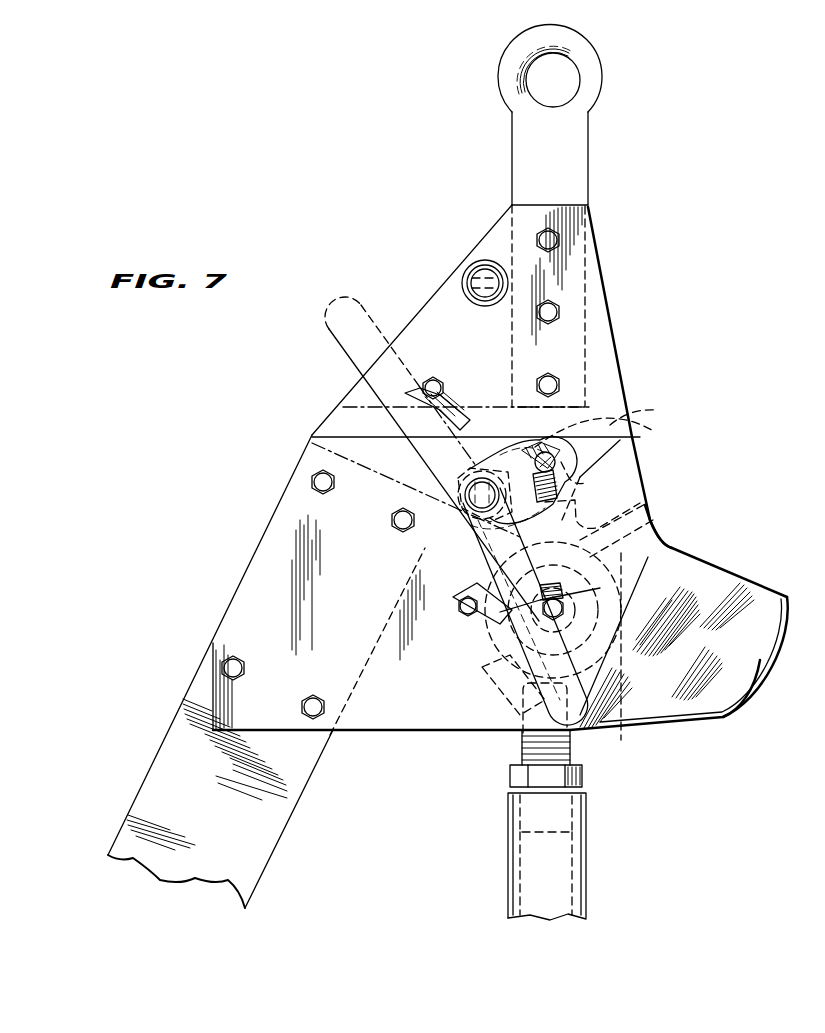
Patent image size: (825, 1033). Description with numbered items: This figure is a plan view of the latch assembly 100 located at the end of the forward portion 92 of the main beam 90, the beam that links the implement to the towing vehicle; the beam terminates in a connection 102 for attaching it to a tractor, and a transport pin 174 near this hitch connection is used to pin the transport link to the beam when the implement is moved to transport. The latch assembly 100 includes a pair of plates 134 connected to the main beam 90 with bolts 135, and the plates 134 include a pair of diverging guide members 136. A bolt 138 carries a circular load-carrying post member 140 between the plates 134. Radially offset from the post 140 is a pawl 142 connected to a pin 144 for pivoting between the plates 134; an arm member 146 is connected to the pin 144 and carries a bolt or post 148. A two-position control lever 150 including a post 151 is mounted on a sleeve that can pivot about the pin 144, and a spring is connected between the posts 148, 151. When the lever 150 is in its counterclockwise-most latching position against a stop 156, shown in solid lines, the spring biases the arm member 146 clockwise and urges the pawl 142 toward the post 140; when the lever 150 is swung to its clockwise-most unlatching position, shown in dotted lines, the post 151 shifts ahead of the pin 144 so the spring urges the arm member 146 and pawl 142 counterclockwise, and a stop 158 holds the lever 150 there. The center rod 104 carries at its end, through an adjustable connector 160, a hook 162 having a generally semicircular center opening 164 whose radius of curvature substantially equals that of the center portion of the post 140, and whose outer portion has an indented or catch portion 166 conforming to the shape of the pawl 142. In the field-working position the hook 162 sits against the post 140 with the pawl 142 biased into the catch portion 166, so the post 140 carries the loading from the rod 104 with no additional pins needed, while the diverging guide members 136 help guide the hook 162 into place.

The main beam 90 is at (120, 809).
The forward portion 92 is at (185, 765).
The latch assembly 100 is at (687, 288).
The connection 102 is at (500, 80).
The center rod 104 is at (530, 858).
The plates 134 is at (255, 612).
The bolts 135 is at (394, 527).
The diverging guide members 136 is at (712, 695).
The bolt 138 is at (565, 612).
The load-carrying post member 140 is at (640, 576).
The pawl 142 is at (622, 421).
The pin 144 is at (464, 496).
The arm member 146 is at (506, 468).
The bolt or post 148 is at (547, 462).
The two-position control lever 150 is at (350, 312).
The post 151 is at (400, 400).
The stop 156 is at (488, 630).
The stop 158 is at (440, 380).
The adjustable connector 160 is at (585, 784).
The hook 162 is at (616, 700).
The semicircular center opening 164 is at (656, 530).
The indented or catch portion 166 is at (640, 493).
The transport pin 174 is at (473, 270).